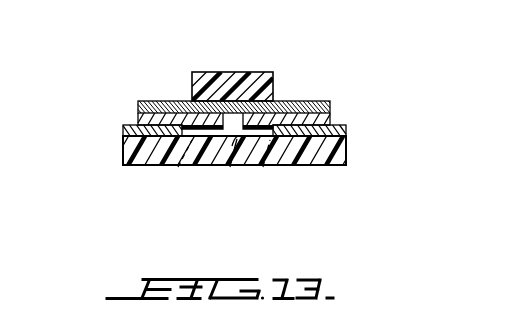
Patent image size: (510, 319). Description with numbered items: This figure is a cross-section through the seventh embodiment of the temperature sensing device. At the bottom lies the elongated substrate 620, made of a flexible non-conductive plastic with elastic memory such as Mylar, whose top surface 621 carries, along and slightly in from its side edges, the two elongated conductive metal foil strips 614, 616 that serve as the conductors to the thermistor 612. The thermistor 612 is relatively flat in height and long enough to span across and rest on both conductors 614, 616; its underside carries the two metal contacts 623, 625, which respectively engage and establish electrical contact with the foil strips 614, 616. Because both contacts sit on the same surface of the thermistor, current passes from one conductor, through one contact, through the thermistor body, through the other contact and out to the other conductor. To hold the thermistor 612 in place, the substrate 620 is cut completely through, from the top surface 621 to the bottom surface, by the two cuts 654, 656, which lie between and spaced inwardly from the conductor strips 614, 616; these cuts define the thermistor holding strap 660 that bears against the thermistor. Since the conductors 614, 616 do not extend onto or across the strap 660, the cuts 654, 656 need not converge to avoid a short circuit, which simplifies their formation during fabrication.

The thermistor holding strap 660 is at (266, 36).
The thermistor 612 is at (298, 102).
The thermistor contact 623 is at (138, 120).
The thermistor contact 625 is at (330, 117).
The conductive metal foil strip 614 is at (122, 130).
The conductive metal foil strip 616 is at (347, 128).
The substrate 620 is at (347, 155).
The top surface 621 is at (230, 167).
The cut 654 is at (178, 167).
The cut 656 is at (263, 167).